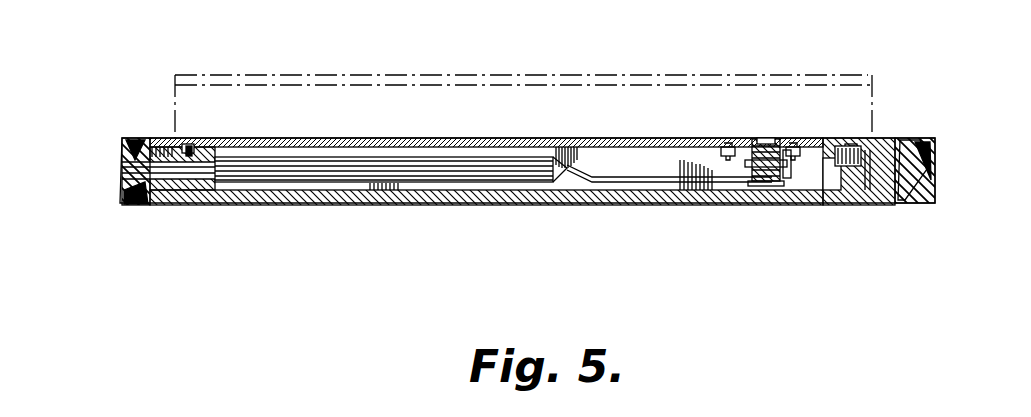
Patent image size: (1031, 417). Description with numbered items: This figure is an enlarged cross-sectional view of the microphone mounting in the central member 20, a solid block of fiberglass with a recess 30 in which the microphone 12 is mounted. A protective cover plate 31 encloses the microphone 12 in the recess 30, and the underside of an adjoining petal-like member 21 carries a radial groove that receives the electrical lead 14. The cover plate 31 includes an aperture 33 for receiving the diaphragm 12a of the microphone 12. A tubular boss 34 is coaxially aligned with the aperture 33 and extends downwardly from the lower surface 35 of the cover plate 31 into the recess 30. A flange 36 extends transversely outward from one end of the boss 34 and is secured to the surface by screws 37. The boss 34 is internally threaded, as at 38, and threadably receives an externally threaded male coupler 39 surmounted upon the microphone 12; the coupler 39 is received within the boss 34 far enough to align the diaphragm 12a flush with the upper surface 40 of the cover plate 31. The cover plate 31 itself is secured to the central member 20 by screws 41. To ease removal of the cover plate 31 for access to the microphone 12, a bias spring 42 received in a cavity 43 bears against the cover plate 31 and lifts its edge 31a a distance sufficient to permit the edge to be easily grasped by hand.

The microphone 12 is at (788, 150).
The diaphragm 12a is at (767, 138).
The electrical lead 14 is at (122, 168).
The central member 20 is at (297, 205).
The petal-like member 21 is at (137, 138).
The recess 30 is at (643, 160).
The cover plate 31 is at (488, 77).
The edge 31a is at (872, 80).
The aperture 33 is at (780, 138).
The tubular boss 34 is at (737, 158).
The lower surface 35 is at (588, 148).
The flange 36 is at (718, 145).
The screws 37 is at (734, 145).
The internal threads 38 is at (745, 150).
The male coupler 39 is at (770, 150).
The upper surface 40 is at (420, 138).
The screws 41 is at (197, 138).
The bias spring 42 is at (857, 204).
The cavity 43 is at (850, 142).